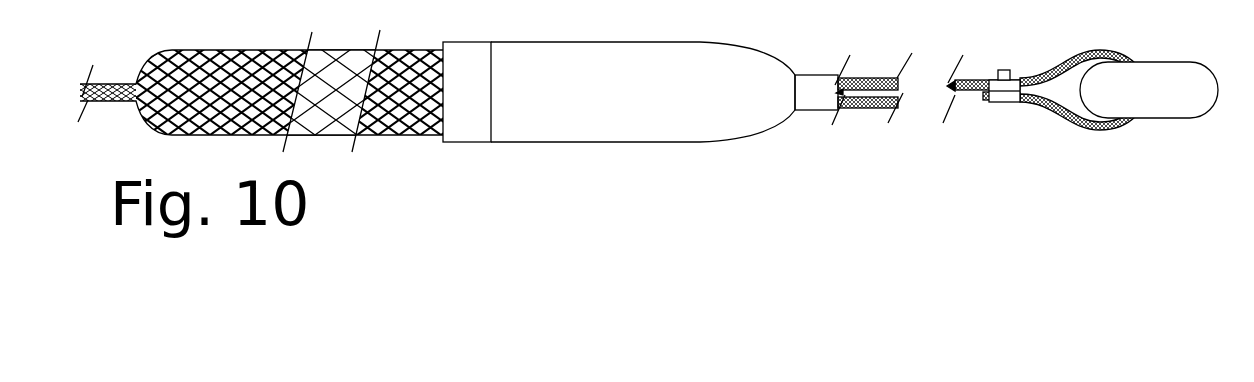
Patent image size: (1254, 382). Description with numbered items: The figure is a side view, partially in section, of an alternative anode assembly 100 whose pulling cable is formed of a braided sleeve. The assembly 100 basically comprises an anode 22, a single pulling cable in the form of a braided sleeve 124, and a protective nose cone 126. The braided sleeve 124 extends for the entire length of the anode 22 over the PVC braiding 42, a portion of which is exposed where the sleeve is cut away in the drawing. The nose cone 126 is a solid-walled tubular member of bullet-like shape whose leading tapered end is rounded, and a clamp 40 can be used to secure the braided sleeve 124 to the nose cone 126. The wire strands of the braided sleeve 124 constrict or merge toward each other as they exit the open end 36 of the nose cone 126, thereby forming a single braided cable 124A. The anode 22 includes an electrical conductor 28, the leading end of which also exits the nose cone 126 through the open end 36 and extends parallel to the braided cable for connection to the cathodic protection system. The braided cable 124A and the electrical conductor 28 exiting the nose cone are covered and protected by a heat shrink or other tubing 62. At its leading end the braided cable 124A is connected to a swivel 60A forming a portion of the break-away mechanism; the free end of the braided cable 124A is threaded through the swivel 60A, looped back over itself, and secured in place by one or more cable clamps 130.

The anode assembly 100 is at (543, 164).
The braided sleeve 124 is at (403, 143).
The PVC braiding 42 is at (331, 99).
The anode 22 is at (335, 84).
The clamp 40 is at (461, 62).
The protective nose cone 126 is at (670, 77).
The open end 36 is at (796, 72).
The heat shrink tubing 62 is at (823, 96).
The braided cable 124A is at (870, 78).
The electrical conductor 28 is at (866, 106).
The cable clamp 130 is at (1003, 97).
The swivel 60A is at (1140, 103).